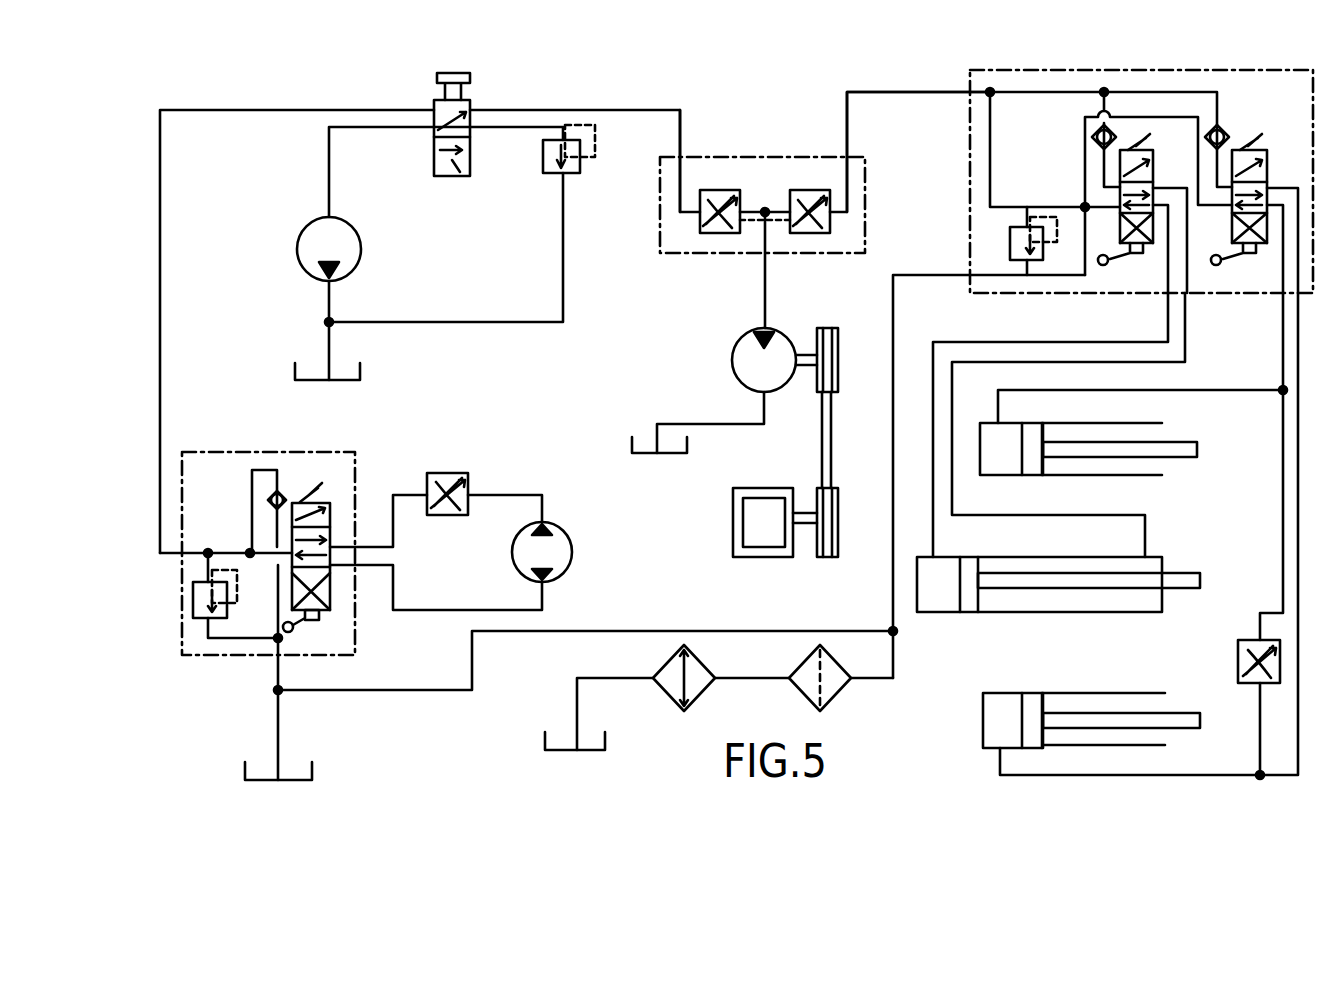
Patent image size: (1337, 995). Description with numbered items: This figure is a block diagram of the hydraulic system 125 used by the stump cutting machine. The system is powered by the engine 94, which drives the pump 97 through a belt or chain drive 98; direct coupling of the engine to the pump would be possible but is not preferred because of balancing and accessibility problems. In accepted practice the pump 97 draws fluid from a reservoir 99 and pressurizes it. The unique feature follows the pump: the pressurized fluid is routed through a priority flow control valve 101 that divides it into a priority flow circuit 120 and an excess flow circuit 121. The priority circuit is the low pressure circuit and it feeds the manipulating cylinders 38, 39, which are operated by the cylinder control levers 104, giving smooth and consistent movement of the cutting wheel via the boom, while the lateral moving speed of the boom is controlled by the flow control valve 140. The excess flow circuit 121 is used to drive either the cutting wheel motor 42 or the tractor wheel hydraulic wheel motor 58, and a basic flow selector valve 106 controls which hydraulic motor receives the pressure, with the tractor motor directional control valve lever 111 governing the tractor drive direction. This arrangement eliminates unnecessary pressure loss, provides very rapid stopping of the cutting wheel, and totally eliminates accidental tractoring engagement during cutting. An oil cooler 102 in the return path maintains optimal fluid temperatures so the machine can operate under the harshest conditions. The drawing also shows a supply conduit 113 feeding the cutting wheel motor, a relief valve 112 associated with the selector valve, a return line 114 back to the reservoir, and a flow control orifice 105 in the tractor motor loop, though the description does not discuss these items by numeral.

The pump supply conduit 113 is at (323, 190).
The cutting wheel motor 42 is at (297, 264).
The flow selector valve 106 is at (453, 178).
The relief valve 112 is at (570, 176).
The excess flow circuit 121 is at (678, 140).
The priority flow control valve 101 is at (757, 157).
The priority flow circuit 120 is at (900, 143).
The cylinder control levers 104 is at (970, 212).
The pump 97 is at (735, 353).
The belt or chain drive 98 is at (823, 557).
The engine 94 is at (732, 534).
The reservoir 99 is at (628, 440).
The return line 114 is at (165, 393).
The flow control orifice 105 is at (445, 472).
The hydraulic wheel motor 58 is at (568, 535).
The oil cooler 102 is at (656, 666).
The tractor motor directional control valve lever 111 is at (220, 656).
The manipulating cylinder 38 is at (1180, 708).
The manipulating cylinder 39 is at (1080, 614).
The flow control valve 140 is at (1246, 690).
The hydraulic system 125 is at (658, 770).